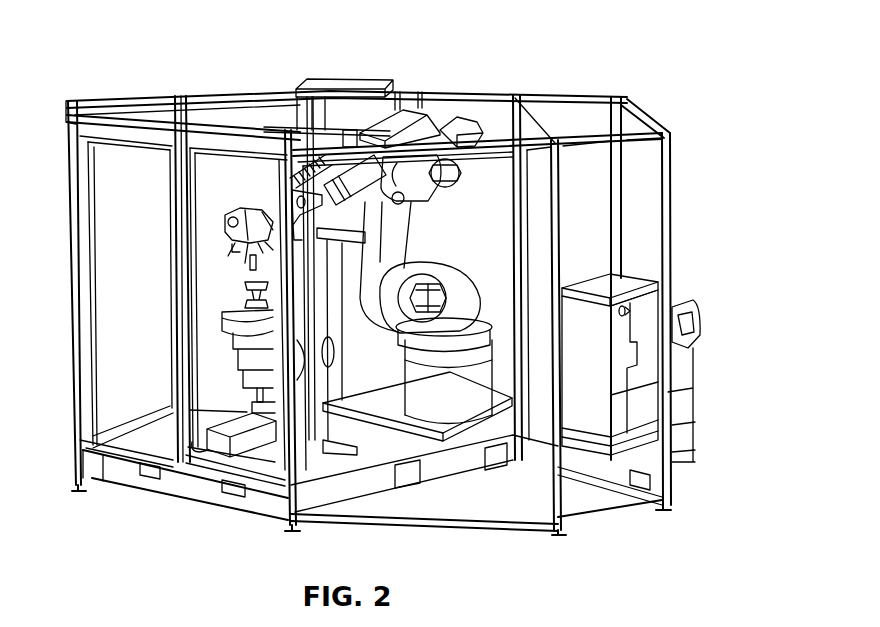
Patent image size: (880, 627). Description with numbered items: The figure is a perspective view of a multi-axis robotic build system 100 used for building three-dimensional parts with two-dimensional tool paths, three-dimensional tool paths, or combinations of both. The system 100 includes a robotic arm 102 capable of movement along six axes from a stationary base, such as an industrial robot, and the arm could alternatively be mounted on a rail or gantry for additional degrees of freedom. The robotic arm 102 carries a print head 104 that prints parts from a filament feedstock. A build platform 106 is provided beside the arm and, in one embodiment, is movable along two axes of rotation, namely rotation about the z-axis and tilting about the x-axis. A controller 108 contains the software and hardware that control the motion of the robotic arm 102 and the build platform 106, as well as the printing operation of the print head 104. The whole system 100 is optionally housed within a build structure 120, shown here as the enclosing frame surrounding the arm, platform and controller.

The multi-axis robotic build system 100 is at (690, 96).
The robotic arm 102 is at (457, 280).
The print head 104 is at (234, 214).
The build platform 106 is at (218, 322).
The controller 108 is at (668, 274).
The build structure 120 is at (88, 163).